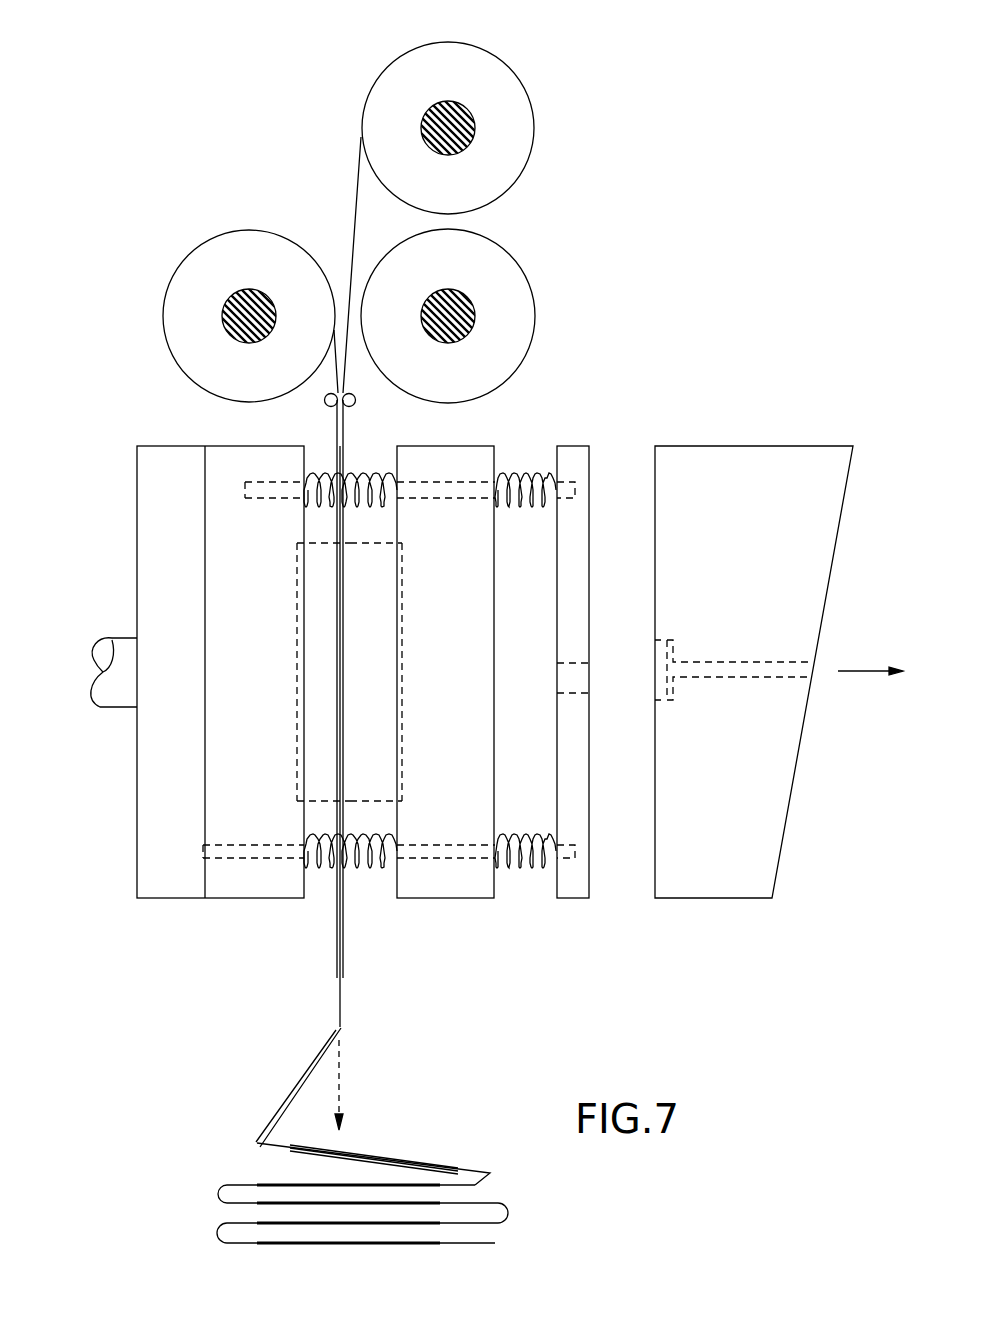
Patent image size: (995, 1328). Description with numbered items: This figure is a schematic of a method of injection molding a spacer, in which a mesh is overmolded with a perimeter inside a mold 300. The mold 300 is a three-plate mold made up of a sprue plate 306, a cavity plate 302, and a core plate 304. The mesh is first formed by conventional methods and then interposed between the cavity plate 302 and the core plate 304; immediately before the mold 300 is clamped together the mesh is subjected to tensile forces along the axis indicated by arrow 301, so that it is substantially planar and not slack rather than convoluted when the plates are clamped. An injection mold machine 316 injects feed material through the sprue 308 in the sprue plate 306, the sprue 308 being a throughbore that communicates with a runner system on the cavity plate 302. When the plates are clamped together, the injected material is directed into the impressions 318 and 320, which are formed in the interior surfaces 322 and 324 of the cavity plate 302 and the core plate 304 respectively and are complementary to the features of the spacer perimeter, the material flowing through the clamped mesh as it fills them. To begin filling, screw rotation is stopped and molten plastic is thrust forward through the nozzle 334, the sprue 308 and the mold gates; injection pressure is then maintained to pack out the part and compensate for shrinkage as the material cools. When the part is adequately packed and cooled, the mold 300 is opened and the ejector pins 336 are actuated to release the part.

The mold 300 is at (574, 346).
The arrow 301 is at (350, 1090).
The cavity plate 302 is at (445, 898).
The core plate 304 is at (269, 898).
The sprue plate 306 is at (590, 858).
The sprue 308 is at (574, 677).
The injection mold machine 316 is at (747, 378).
The impression 318 is at (402, 661).
The impression 320 is at (297, 643).
The interior surface 322 is at (368, 553).
The interior surface 324 is at (308, 537).
The nozzle 334 is at (783, 445).
The ejector pins 336 is at (533, 510).